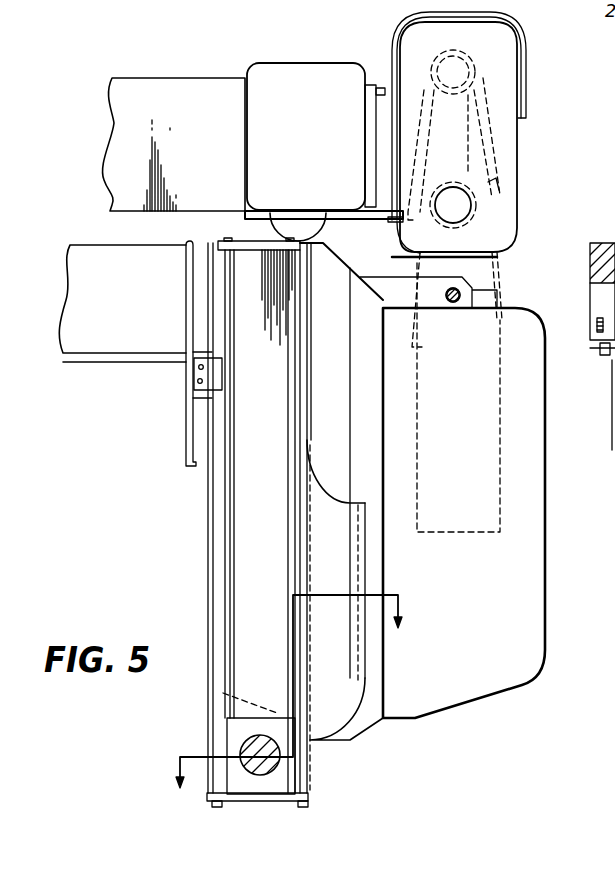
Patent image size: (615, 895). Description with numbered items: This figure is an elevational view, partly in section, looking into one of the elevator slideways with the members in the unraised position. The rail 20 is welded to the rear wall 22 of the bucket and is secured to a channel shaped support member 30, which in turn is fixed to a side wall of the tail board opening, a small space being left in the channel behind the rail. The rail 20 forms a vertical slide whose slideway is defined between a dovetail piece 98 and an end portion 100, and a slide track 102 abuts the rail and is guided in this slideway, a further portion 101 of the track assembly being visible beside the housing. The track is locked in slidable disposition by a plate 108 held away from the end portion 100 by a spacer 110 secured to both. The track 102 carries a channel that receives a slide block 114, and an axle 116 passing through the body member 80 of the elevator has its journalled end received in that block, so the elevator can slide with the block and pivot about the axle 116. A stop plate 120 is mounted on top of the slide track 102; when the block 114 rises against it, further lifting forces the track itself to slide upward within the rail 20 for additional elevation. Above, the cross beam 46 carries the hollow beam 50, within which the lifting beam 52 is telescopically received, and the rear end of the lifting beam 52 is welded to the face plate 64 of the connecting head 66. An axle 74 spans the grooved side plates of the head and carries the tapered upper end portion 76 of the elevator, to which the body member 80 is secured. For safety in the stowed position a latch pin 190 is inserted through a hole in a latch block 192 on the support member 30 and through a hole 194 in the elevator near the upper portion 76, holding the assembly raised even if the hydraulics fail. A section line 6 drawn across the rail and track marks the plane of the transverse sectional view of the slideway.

The rail 20 is at (362, 305).
The rear wall 22 is at (187, 333).
The channel shaped support member 30 is at (480, 673).
The cross beam 46 is at (298, 63).
The hollow beam 50 is at (185, 78).
The lifting beam 52 is at (385, 90).
The face plate 64 is at (393, 48).
The connecting head 66 is at (530, 57).
The axle 74 is at (468, 193).
The upper end portion 76 is at (478, 58).
The body member 80 is at (500, 427).
The dovetail piece 98 is at (323, 272).
The end portion 100 is at (590, 278).
The column 101 is at (335, 550).
The slide track 102 is at (245, 573).
The plate 108 is at (200, 383).
The spacer 110 is at (590, 335).
The slide block 114 is at (265, 787).
The axle 116 is at (277, 763).
The stop plate 120 is at (235, 240).
The latch pin 190 is at (454, 303).
The latch block 192 is at (458, 296).
The hole 194 is at (516, 290).
The section line 6- 6 is at (288, 702).